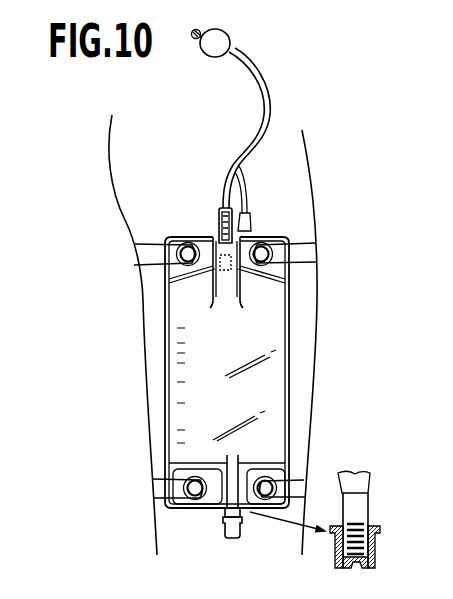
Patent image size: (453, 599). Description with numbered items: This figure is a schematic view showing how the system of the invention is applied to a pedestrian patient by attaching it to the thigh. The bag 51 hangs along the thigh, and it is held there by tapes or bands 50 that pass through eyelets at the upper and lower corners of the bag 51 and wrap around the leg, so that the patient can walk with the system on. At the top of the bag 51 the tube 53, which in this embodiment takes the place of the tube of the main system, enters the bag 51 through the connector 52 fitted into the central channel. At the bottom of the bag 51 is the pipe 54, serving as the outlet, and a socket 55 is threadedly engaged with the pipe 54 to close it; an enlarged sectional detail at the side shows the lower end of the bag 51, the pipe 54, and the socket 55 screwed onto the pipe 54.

The tapes or bands 50 is at (145, 255).
The bag 51 is at (273, 298).
The connector 52 is at (222, 248).
The tube 53 is at (272, 101).
The pipe 54 is at (222, 497).
The socket 55 is at (225, 530).